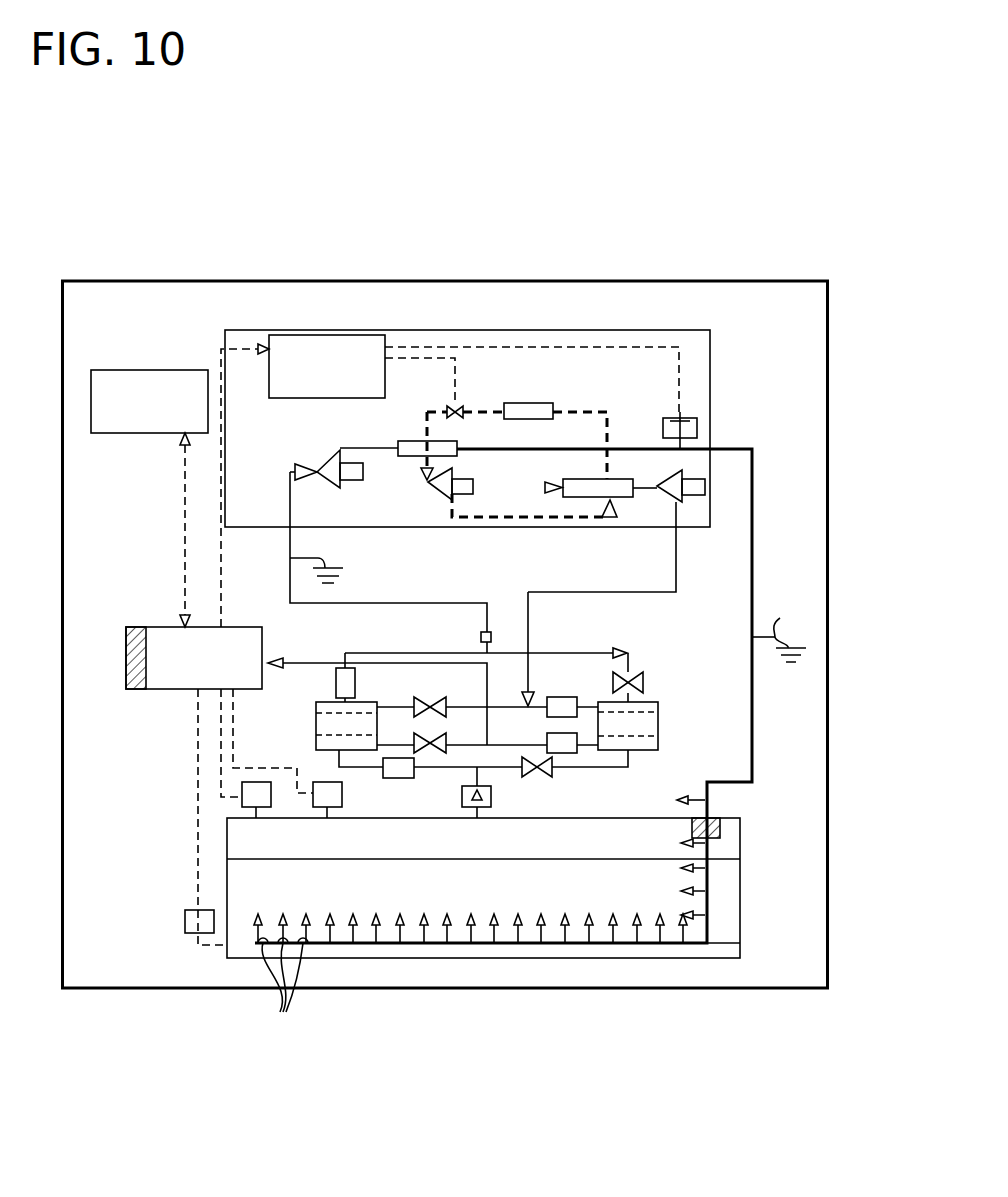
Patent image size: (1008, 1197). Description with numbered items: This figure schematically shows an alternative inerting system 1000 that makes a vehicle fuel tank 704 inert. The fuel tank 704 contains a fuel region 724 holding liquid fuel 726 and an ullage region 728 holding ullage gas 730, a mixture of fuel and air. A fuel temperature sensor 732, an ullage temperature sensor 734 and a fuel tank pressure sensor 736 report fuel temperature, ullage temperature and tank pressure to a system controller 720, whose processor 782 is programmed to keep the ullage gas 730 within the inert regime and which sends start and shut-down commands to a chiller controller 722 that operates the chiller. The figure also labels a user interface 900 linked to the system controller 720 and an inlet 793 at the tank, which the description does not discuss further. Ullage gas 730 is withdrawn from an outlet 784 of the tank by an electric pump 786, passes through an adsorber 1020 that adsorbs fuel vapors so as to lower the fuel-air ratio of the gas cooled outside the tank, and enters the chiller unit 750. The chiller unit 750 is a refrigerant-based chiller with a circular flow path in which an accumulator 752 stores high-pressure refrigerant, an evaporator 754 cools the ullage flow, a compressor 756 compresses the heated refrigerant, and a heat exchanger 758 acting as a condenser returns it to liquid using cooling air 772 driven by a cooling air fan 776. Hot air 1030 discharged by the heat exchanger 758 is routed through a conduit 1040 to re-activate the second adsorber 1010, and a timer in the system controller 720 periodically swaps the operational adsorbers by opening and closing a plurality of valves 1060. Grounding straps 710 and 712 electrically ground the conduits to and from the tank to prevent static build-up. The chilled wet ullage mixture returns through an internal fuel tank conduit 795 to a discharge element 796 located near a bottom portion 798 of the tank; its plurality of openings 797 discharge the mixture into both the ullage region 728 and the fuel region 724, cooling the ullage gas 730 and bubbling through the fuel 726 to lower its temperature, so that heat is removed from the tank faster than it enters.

The system 1000 is at (778, 246).
The vehicle fuel tank 704 is at (710, 351).
The chiller controller 722 is at (297, 335).
The user interface 900 is at (196, 370).
The system controller 720 is at (168, 627).
The processor 782 is at (137, 689).
The chiller unit 750 is at (473, 345).
The accumulator 752 is at (538, 403).
The evaporator 754 is at (405, 441).
The electric pump 786 is at (318, 466).
The grounding strap 710 is at (310, 558).
The compressor 756 is at (455, 479).
The heat exchanger 758 is at (595, 479).
The cooling air 772 is at (545, 487).
The cooling air fan 776 is at (705, 490).
The grounding strap 712 is at (779, 629).
The hot air 1030 is at (665, 547).
The conduit 1040 is at (542, 592).
The adsorber 1020 is at (316, 722).
The adsorber 1010 is at (658, 740).
The valves 1060 is at (655, 671).
The fuel tank pressure sensor 736 is at (312, 795).
The ullage temperature sensor 734 is at (242, 797).
The fuel temperature sensor 732 is at (185, 922).
The outlet 784 is at (491, 797).
The inlet 793 is at (692, 828).
The internal fuel tank conduit 795 is at (690, 856).
The ullage gas 730 is at (450, 840).
The fuel 726 is at (470, 909).
The ullage region 728 is at (215, 840).
The fuel region 724 is at (215, 886).
The openings 797 is at (292, 989).
The discharge element 796 is at (432, 945).
The bottom portion 798 is at (735, 952).